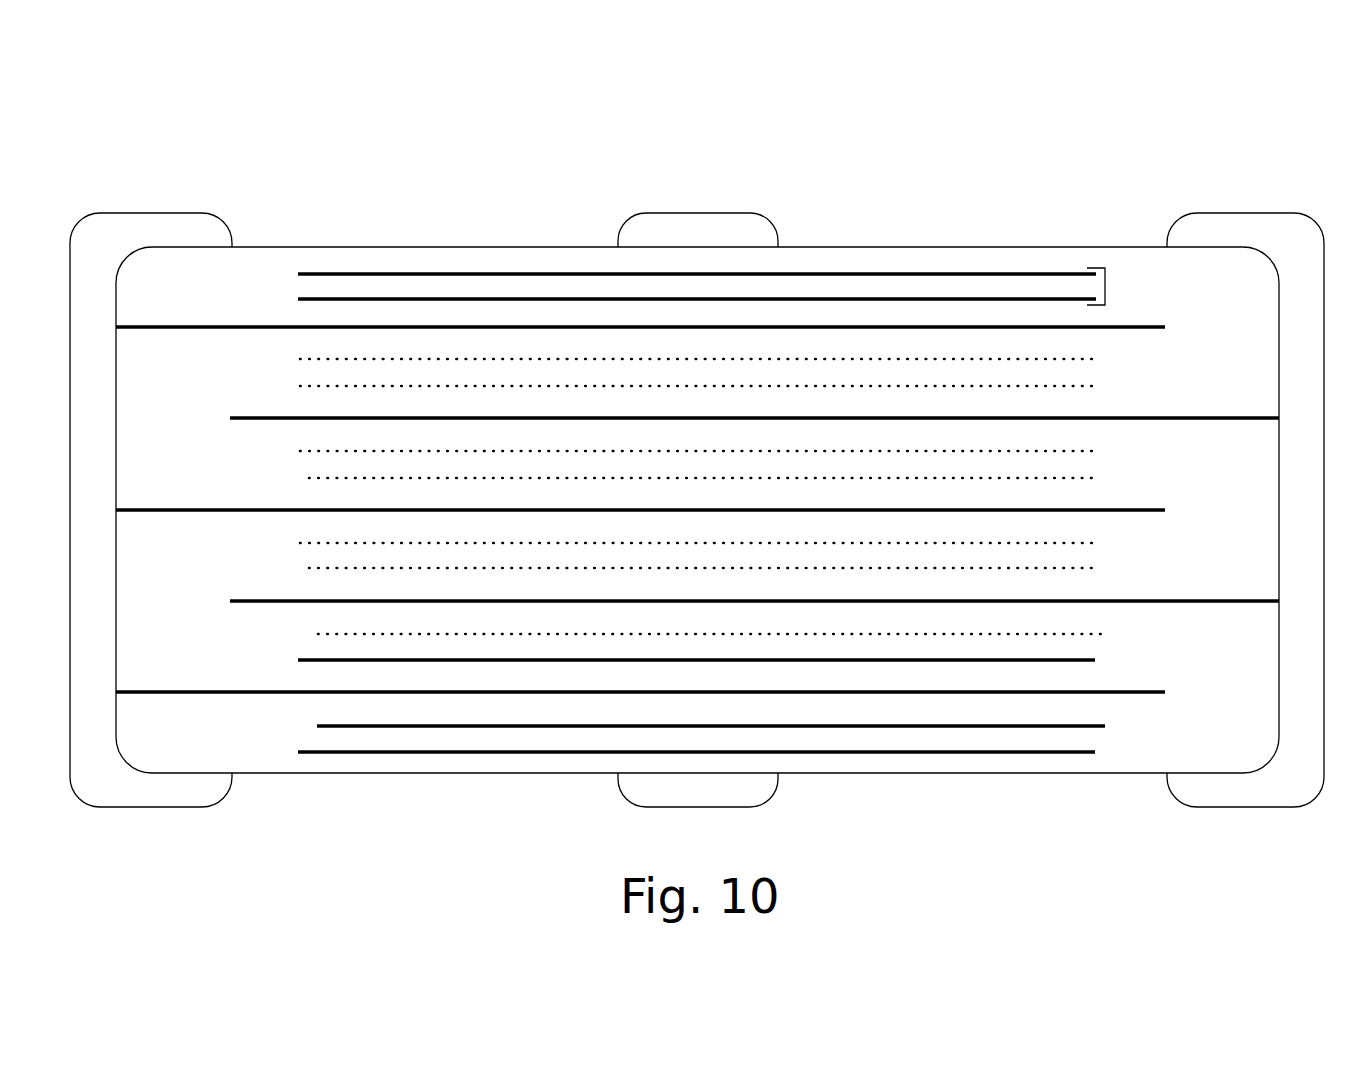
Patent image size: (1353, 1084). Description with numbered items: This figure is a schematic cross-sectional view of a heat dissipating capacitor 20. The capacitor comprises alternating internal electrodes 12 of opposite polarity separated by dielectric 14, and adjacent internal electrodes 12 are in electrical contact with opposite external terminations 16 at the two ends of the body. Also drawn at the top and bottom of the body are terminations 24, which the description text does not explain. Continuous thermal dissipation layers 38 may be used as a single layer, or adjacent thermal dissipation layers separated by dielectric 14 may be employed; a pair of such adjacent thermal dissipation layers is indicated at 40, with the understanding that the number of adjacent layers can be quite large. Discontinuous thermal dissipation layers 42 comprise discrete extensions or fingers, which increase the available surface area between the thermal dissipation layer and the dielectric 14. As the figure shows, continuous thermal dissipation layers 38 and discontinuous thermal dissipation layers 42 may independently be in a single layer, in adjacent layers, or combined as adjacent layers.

The internal electrodes 12 is at (268, 418).
The dielectric 14 is at (158, 412).
The external terminations 16 is at (105, 763).
The heat dissipating capacitor 20 is at (855, 222).
The side terminations 24 is at (717, 237).
The continuous thermal dissipation layers 38 is at (1042, 299).
The pair of adjacent thermal dissipation layers 40 is at (1110, 277).
The discontinuous thermal dissipation layers 42 is at (518, 478).